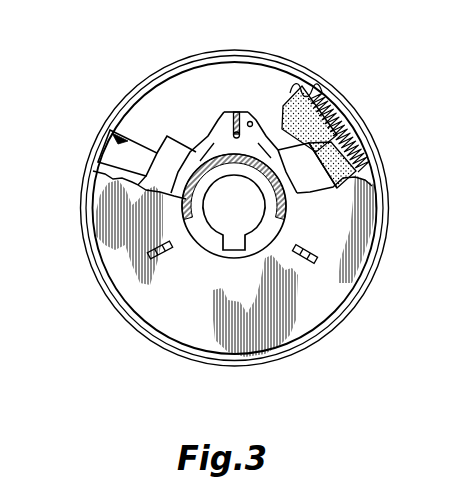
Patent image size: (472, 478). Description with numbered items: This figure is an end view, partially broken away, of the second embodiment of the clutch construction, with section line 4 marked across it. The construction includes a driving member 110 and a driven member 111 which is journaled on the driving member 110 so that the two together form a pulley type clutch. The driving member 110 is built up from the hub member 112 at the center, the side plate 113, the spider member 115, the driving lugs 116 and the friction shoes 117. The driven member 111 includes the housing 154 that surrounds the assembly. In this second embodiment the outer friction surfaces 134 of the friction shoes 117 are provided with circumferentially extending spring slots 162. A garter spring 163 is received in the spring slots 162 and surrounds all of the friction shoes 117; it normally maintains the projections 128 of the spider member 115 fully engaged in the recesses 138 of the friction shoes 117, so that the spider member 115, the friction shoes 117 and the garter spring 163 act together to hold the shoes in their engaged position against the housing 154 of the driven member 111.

The driving member 110 is at (125, 283).
The driven member 111 is at (330, 338).
The hub member 112 is at (213, 243).
The side plate 113 is at (329, 288).
The spider member 115 is at (178, 180).
The driving lugs 116 is at (222, 116).
The friction shoes 117 is at (158, 117).
The projections 128 is at (221, 114).
The outer friction surfaces 134 is at (155, 78).
The recesses 138 is at (254, 122).
The housing 154 is at (157, 347).
The spring slots 162 is at (344, 127).
The garter spring 163 is at (314, 97).
The section line 4 is at (237, 48).